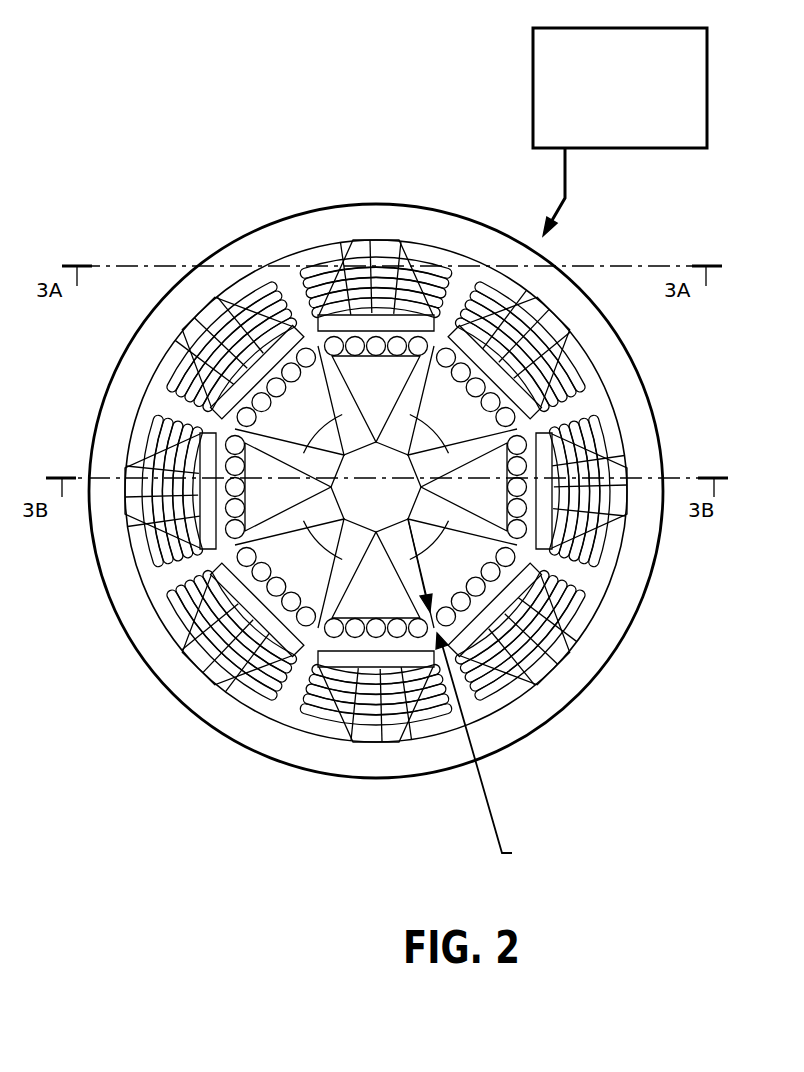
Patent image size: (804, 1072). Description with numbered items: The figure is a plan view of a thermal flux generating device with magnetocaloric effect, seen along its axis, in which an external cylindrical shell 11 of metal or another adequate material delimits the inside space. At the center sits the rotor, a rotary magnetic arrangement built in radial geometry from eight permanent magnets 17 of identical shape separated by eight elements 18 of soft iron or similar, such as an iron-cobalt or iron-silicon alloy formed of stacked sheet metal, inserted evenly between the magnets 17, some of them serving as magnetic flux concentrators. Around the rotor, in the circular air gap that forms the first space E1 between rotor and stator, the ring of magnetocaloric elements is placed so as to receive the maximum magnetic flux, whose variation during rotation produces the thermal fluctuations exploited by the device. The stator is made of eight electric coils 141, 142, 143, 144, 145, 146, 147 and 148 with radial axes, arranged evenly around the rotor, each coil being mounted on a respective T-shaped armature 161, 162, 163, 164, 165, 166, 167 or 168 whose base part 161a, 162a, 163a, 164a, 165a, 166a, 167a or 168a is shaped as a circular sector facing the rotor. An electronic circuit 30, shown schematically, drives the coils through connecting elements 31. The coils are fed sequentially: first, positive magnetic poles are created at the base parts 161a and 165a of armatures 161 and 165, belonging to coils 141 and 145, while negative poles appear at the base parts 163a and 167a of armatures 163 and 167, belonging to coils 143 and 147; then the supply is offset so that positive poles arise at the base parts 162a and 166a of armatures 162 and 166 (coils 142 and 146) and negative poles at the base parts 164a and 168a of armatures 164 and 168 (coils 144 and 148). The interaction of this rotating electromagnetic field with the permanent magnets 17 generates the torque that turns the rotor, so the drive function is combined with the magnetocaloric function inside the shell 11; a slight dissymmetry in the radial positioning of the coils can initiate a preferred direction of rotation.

The external cylindrical shell 11 is at (133, 363).
The permanent magnet 17 is at (310, 438).
The soft iron element 18 is at (386, 393).
The electronic circuit 30 is at (627, 92).
The connecting elements 31 is at (602, 196).
The first space E1 is at (546, 853).
The electric coil 141 is at (450, 263).
The electric coil 142 is at (250, 282).
The electric coil 143 is at (128, 440).
The electric coil 144 is at (182, 627).
The electric coil 145 is at (325, 710).
The electric coil 146 is at (568, 618).
The electric coil 147 is at (620, 458).
The electric coil 148 is at (588, 333).
The armature 161 is at (376, 242).
The armature 162 is at (218, 300).
The armature 163 is at (128, 505).
The armature 164 is at (204, 670).
The armature 165 is at (376, 740).
The armature 166 is at (551, 665).
The armature 167 is at (624, 492).
The armature 168 is at (549, 314).
The base part 161a is at (323, 263).
The base part 162a is at (182, 340).
The base part 163a is at (165, 597).
The base part 164a is at (282, 650).
The base part 165a is at (438, 742).
The base part 166a is at (498, 704).
The base part 167a is at (596, 552).
The base part 168a is at (600, 385).